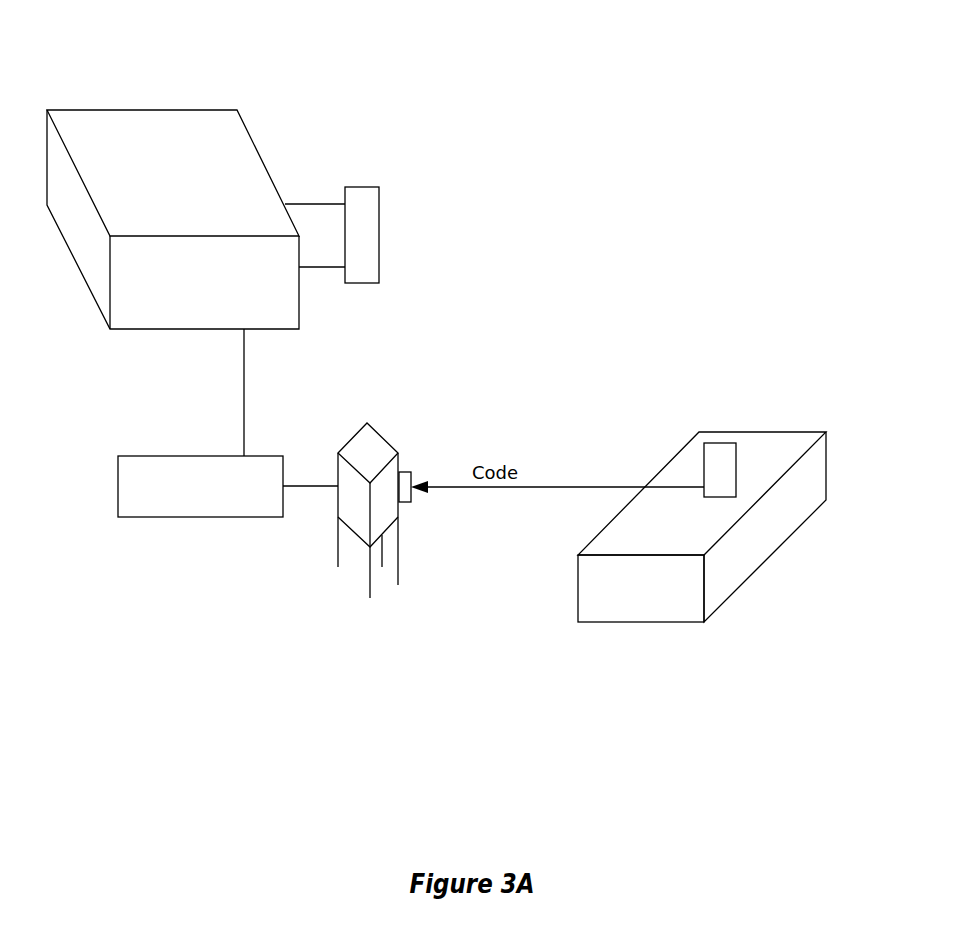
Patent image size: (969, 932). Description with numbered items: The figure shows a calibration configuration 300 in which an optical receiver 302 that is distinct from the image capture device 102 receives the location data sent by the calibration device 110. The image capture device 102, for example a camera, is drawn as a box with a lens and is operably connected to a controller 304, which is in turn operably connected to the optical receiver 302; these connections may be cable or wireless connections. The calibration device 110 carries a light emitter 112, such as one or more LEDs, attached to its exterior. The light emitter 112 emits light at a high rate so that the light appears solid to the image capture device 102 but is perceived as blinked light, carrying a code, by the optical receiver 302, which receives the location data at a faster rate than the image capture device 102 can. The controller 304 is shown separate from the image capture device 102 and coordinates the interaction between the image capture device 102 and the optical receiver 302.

The calibration configuration 300 is at (398, 77).
The image capture device 102 is at (200, 331).
The controller 304 is at (190, 518).
The optical receiver 302 is at (372, 455).
The calibration device 110 is at (645, 621).
The light emitter 112 is at (738, 457).